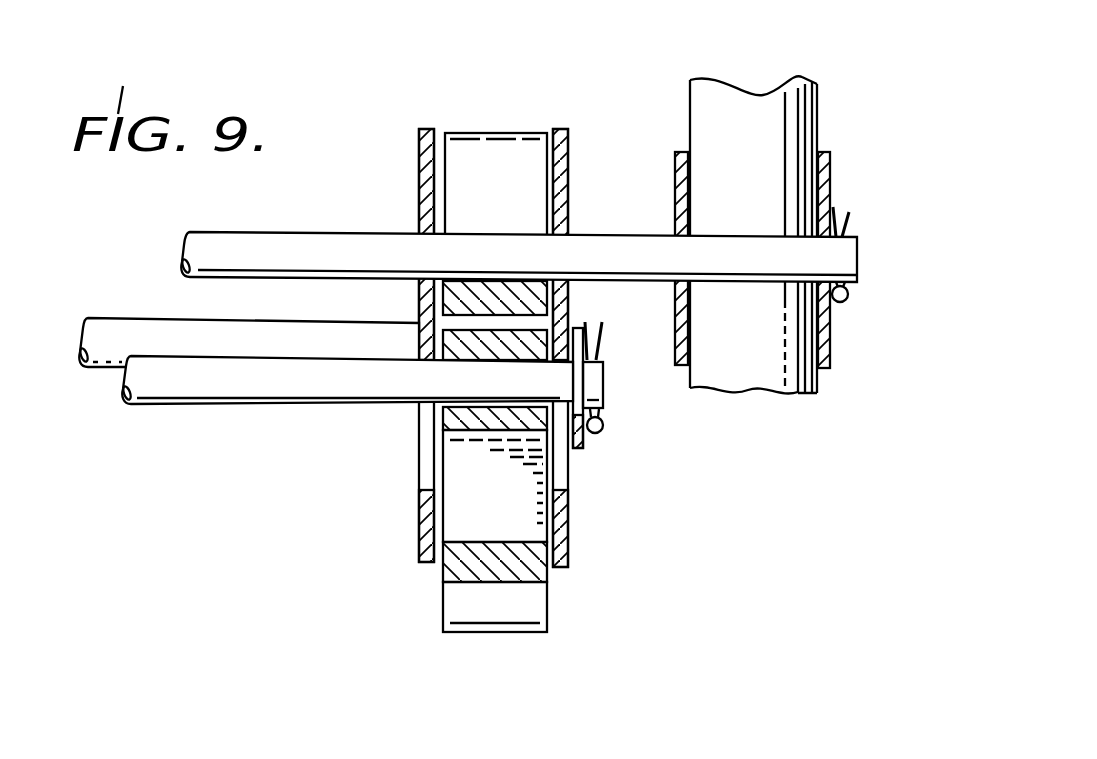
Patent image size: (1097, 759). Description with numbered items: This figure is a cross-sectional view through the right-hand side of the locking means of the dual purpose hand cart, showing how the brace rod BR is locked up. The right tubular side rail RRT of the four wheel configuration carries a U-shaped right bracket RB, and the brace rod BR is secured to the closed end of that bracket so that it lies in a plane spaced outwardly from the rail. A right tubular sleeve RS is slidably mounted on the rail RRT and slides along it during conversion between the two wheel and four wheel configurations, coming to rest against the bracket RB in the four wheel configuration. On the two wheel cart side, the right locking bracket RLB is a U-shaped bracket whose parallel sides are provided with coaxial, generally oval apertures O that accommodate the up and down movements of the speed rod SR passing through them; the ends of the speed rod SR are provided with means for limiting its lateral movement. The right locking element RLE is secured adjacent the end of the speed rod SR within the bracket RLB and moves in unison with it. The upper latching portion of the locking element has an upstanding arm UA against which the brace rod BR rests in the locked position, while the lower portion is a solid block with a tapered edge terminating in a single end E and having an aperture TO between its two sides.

The upstanding arm UA is at (482, 143).
The right locking bracket RLB is at (570, 145).
The right tubular side rail RRT is at (750, 110).
The brace rod BR is at (326, 240).
The right tubular sleeve RS is at (115, 327).
The speed rod SR is at (208, 387).
The aperture O is at (425, 445).
The aperture TO is at (463, 470).
The right locking element RLE is at (441, 577).
The end E is at (497, 633).
The right bracket RB is at (827, 348).